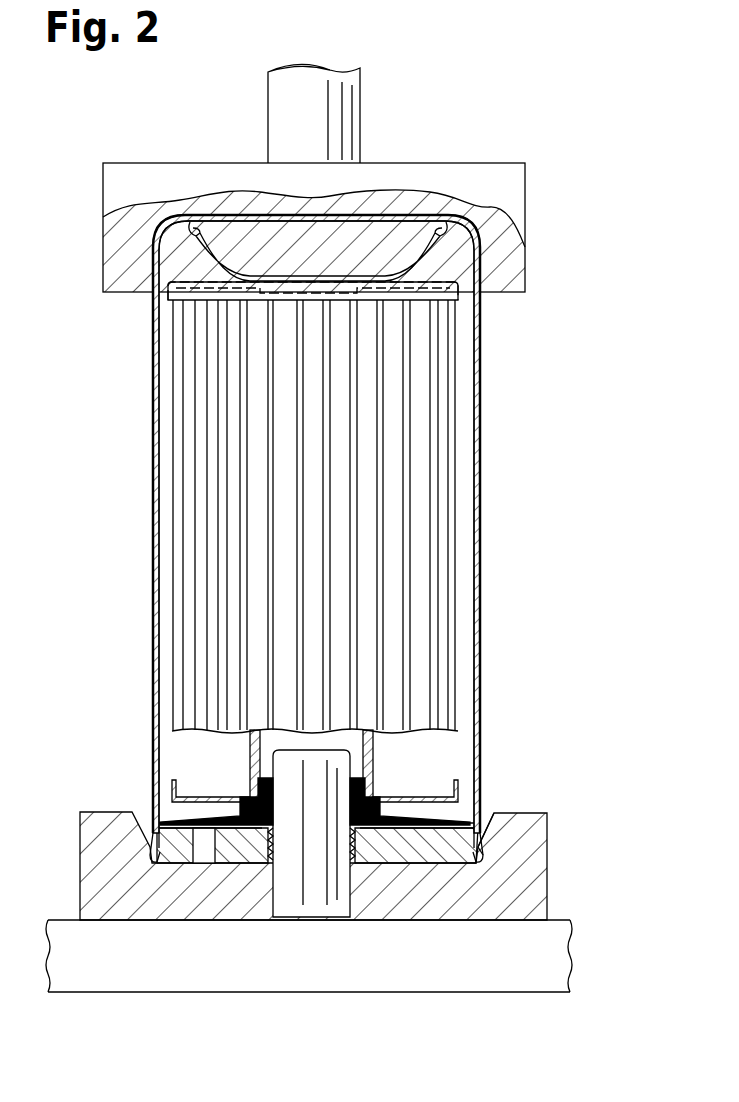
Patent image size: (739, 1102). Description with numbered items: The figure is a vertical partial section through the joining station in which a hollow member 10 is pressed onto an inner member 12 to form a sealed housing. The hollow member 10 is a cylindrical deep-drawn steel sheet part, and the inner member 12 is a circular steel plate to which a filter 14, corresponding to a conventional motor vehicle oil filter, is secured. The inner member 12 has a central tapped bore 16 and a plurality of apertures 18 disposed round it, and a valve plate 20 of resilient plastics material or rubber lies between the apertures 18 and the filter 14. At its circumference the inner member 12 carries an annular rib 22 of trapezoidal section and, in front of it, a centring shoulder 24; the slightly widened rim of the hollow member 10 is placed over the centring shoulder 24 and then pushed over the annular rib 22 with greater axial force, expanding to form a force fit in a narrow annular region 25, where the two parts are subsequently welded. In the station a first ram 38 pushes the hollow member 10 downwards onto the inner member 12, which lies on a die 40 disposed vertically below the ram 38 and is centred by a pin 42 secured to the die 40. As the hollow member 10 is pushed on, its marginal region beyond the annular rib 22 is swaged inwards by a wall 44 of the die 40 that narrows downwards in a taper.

The hollow member 10 is at (477, 447).
The inner member 12 is at (415, 837).
The filter 14 is at (423, 527).
The central tapped bore 16 is at (383, 863).
The apertures 18 is at (198, 852).
The valve plate 20 is at (180, 818).
The annular rib 22 is at (168, 862).
The centring shoulder 24 is at (480, 848).
The annular region 25 is at (482, 847).
The first ram 38 is at (510, 192).
The die 40 is at (520, 887).
The pin 42 is at (303, 893).
The wall 44 is at (483, 842).